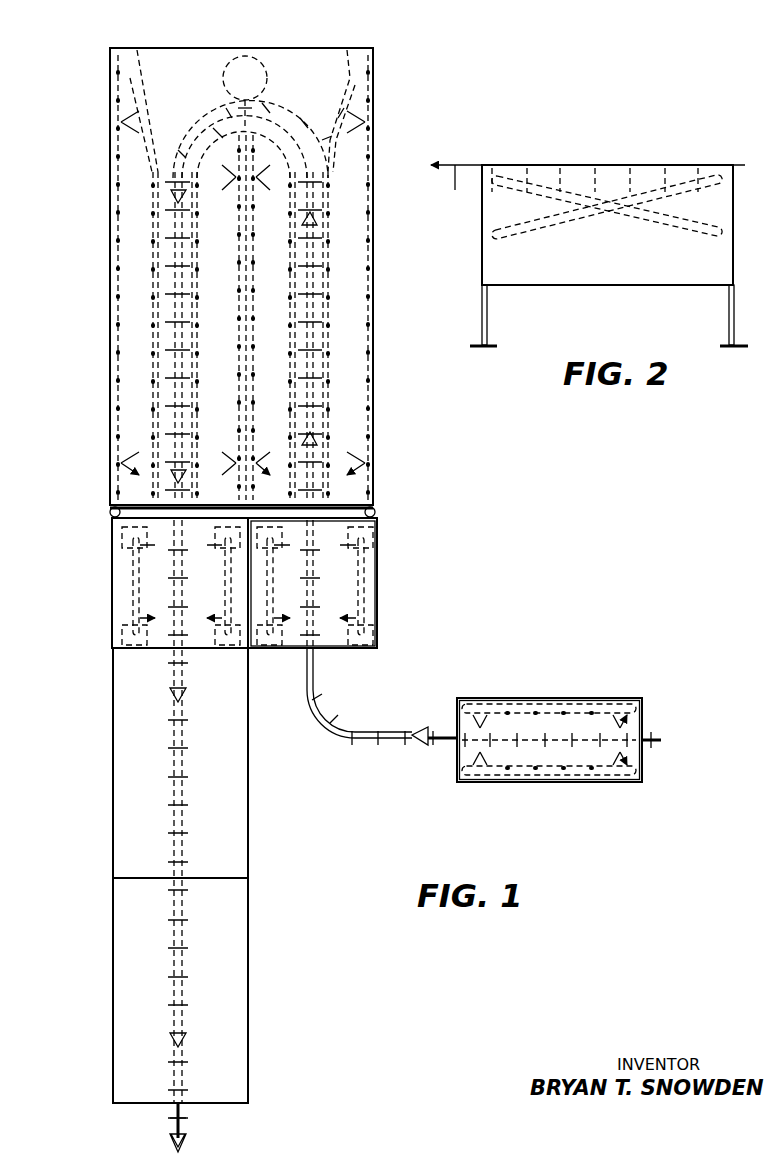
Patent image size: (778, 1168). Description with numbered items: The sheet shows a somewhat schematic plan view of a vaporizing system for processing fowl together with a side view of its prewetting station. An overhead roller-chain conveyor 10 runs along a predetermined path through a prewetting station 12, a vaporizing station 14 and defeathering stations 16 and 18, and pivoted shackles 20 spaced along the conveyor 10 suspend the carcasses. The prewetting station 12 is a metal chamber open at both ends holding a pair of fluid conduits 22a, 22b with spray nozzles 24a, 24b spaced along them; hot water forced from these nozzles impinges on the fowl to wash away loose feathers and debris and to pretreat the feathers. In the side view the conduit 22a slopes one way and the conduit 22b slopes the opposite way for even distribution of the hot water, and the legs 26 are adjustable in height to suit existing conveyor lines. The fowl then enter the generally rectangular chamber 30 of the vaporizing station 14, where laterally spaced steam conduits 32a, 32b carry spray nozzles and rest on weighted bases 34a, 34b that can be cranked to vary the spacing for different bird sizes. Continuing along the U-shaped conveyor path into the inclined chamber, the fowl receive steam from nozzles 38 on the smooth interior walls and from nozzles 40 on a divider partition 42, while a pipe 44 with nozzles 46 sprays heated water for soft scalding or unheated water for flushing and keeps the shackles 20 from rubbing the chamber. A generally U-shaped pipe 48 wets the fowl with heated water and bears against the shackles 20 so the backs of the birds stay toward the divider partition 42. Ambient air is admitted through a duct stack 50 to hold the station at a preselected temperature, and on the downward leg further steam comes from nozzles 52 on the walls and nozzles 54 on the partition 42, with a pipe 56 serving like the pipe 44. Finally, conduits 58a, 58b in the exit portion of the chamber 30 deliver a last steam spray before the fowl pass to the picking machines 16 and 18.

In FIG. 1, the overhead roller-chain conveyor 10 is at (282, 115).
In FIG. 2, the overhead roller-chain conveyor 10 is at (468, 138).
In FIG. 1, the prewetting station 12 is at (517, 681).
In FIG. 2, the prewetting station 12 is at (618, 147).
In FIG. 1, the vaporizing station 14 is at (95, 237).
In FIG. 1, the defeathering station 16 is at (95, 722).
In FIG. 1, the defeathering station 18 is at (95, 940).
In FIG. 1, the pivoted shackles 20 is at (225, 130).
In FIG. 2, the pivoted shackles 20 is at (545, 170).
In FIG. 1, the fluid conduit 22a is at (550, 785).
In FIG. 2, the fluid conduit 22a is at (637, 217).
In FIG. 1, the fluid conduit 22b is at (552, 705).
In FIG. 2, the fluid conduit 22b is at (513, 232).
In FIG. 1, the spray nozzles 24a is at (640, 768).
In FIG. 1, the spray nozzles 24b is at (645, 724).
In FIG. 2, the legs 26 is at (485, 325).
In FIG. 1, the generally rectangular chamber 30 is at (452, 615).
In FIG. 1, the steam conduit 32a is at (278, 590).
In FIG. 1, the steam conduit 32b is at (362, 578).
In FIG. 1, the weighted base 34a is at (278, 548).
In FIG. 1, the weighted base 34b is at (374, 542).
In FIG. 1, the nozzles 38 is at (365, 148).
In FIG. 1, the nozzles 40 is at (262, 198).
In FIG. 1, the divider partition 42 is at (246, 310).
In FIG. 1, the pipe 44 is at (347, 56).
In FIG. 1, the nozzles 46 is at (332, 118).
In FIG. 1, the generally U-shaped pipe 48 is at (198, 200).
In FIG. 1, the duct stack 50 is at (263, 65).
In FIG. 1, the nozzles 52 is at (122, 150).
In FIG. 1, the nozzles 54 is at (228, 265).
In FIG. 1, the pipe 56 is at (136, 56).
In FIG. 1, the conduit 58a is at (132, 556).
In FIG. 1, the conduit 58b is at (216, 572).